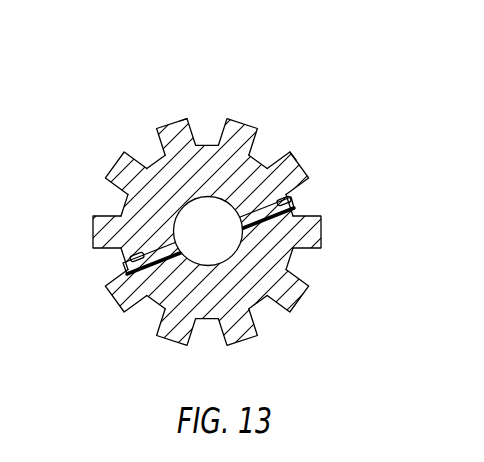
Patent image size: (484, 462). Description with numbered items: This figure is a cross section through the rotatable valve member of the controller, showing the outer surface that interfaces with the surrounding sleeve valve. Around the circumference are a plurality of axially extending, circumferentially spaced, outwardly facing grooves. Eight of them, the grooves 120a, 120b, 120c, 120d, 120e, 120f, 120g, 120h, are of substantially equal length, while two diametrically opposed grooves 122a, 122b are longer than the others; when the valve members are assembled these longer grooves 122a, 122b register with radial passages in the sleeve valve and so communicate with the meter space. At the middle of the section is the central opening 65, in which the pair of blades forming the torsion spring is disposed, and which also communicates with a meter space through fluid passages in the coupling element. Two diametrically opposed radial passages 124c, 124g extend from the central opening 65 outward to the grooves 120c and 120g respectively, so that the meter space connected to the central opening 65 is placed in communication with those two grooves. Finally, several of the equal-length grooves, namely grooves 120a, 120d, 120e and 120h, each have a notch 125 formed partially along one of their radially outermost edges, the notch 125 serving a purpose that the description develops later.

The central opening 65 is at (208, 231).
The groove 120a is at (190, 128).
The groove 120b is at (110, 192).
The groove 120c is at (105, 257).
The groove 120d is at (136, 300).
The groove 120e is at (208, 342).
The groove 120f is at (314, 249).
The groove 120g is at (308, 185).
The groove 120h is at (256, 131).
The groove 122a is at (157, 128).
The groove 122b is at (277, 295).
The radial passage 124c is at (124, 278).
The radial passage 124g is at (326, 228).
The notch 125 is at (186, 119).